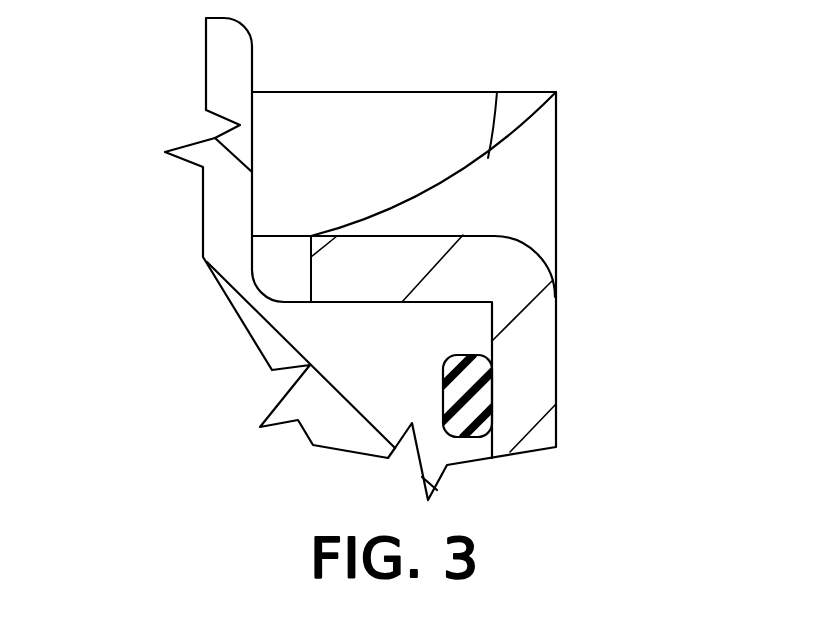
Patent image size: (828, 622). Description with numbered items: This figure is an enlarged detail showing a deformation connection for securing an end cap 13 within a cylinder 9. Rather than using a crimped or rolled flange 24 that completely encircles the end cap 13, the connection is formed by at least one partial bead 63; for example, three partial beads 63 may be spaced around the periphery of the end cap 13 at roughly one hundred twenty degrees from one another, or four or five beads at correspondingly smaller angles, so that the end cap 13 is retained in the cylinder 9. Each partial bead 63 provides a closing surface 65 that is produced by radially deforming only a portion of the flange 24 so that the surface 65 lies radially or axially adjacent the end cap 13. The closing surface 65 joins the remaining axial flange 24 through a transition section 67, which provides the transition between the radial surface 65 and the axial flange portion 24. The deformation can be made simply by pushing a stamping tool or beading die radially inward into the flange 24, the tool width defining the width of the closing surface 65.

The cylinder 9 is at (530, 394).
The end cap 13 is at (338, 362).
The flange 24 is at (273, 113).
The partial bead 63 is at (516, 262).
The closing surface 65 is at (408, 214).
The transition section 67 is at (510, 170).